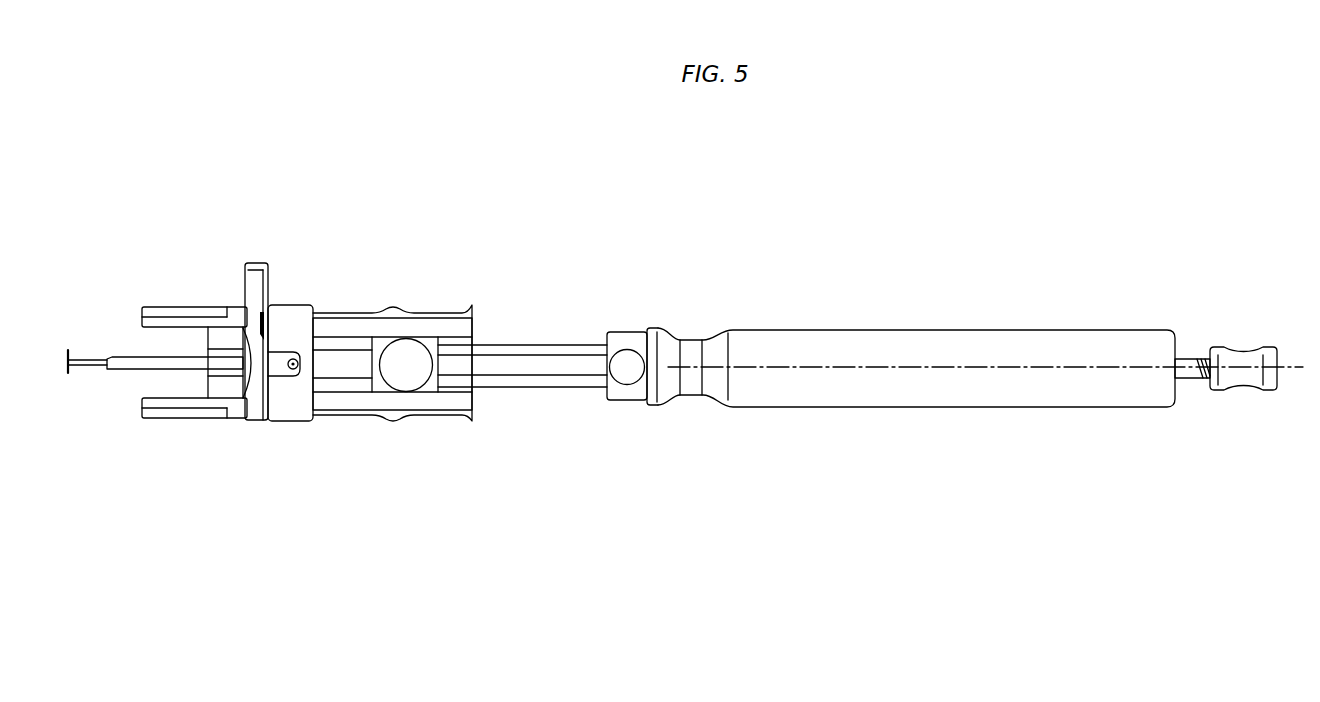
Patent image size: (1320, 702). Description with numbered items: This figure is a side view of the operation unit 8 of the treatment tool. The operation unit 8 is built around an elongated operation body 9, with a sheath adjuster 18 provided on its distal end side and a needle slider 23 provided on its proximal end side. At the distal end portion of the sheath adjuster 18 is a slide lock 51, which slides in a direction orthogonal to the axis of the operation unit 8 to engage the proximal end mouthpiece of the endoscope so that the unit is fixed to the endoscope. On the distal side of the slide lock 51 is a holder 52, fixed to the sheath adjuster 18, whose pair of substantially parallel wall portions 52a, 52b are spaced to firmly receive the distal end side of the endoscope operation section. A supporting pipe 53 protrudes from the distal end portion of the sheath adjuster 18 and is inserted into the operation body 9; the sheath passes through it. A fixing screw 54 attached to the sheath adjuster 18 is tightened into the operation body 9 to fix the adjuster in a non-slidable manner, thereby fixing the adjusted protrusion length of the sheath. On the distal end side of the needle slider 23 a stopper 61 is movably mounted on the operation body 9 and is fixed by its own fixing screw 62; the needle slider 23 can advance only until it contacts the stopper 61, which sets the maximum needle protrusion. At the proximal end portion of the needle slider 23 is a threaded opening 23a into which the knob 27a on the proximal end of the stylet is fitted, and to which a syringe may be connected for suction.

The operation unit 8 is at (975, 367).
The operation body 9 is at (533, 387).
The sheath adjuster 18 is at (383, 298).
The needle slider 23 is at (910, 410).
The opening 23a is at (1200, 386).
The knob 27a is at (1243, 347).
The slide lock 51 is at (258, 287).
The holder 52 is at (196, 348).
The wall portion 52a is at (193, 418).
The wall portion 52b is at (193, 308).
The supporting pipe 53 is at (150, 369).
The fixing screw 54 is at (397, 372).
The stopper 61 is at (627, 328).
The fixing screw 62 is at (622, 373).